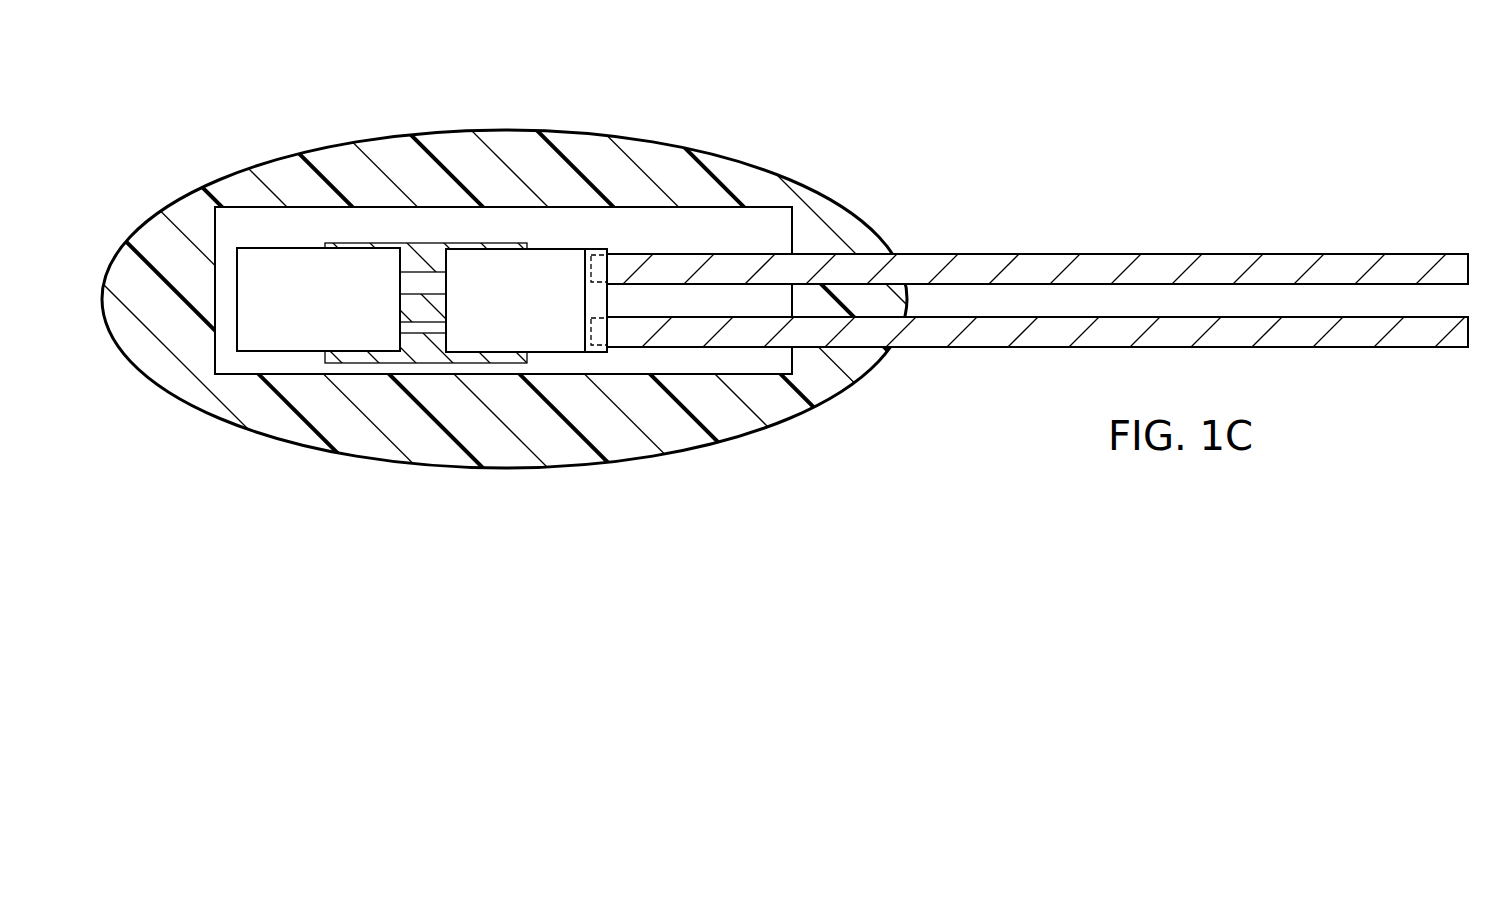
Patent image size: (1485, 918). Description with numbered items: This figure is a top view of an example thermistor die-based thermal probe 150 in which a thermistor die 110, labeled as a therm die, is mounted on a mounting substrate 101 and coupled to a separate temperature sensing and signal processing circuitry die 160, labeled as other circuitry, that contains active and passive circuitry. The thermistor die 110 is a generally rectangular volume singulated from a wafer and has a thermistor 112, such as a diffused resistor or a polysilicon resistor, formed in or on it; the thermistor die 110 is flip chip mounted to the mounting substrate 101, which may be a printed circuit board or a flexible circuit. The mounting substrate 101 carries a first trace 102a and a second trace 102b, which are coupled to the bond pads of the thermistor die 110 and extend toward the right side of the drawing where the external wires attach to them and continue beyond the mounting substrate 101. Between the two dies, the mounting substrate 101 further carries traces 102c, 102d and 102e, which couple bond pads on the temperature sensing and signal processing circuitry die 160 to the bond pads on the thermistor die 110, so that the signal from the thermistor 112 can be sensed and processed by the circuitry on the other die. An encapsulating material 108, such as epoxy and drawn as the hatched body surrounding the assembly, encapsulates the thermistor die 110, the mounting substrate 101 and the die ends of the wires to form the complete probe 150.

The mounting substrate 101 is at (298, 363).
The first trace 102a is at (663, 260).
The second trace 102b is at (673, 338).
The trace 102c is at (408, 263).
The trace 102d is at (408, 300).
The trace 102e is at (438, 346).
The encapsulating material 108 is at (448, 143).
The thermistor die 110 is at (562, 261).
The thermistor 112 is at (585, 298).
The thermistor die-based thermal probe 150 is at (734, 272).
The temperature sensing and signal processing circuitry die 160 is at (290, 257).